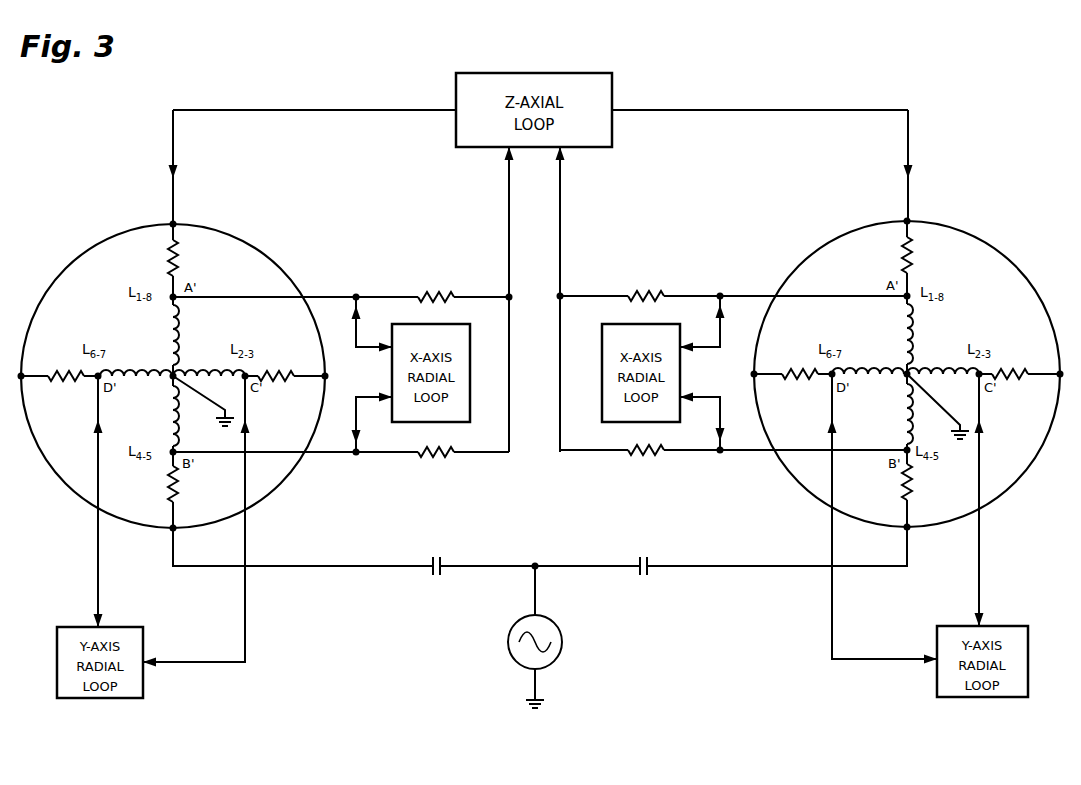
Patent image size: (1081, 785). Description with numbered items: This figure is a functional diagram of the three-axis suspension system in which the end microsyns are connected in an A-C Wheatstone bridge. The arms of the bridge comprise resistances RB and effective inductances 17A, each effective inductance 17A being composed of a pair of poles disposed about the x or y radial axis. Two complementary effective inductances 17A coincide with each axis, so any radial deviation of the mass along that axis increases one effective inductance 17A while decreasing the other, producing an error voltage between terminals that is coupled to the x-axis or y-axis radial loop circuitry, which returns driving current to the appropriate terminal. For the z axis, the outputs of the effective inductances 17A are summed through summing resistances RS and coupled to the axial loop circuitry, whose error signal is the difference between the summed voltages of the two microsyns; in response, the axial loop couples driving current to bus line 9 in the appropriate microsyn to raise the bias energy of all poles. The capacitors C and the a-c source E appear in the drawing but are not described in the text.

The bus line 9 is at (85, 252).
The effective inductance 17A is at (539, 375).
The resistance RB is at (538, 369).
The summing resistance RS is at (541, 377).
The capacitor C is at (543, 575).
The a-c voltage source E is at (553, 642).